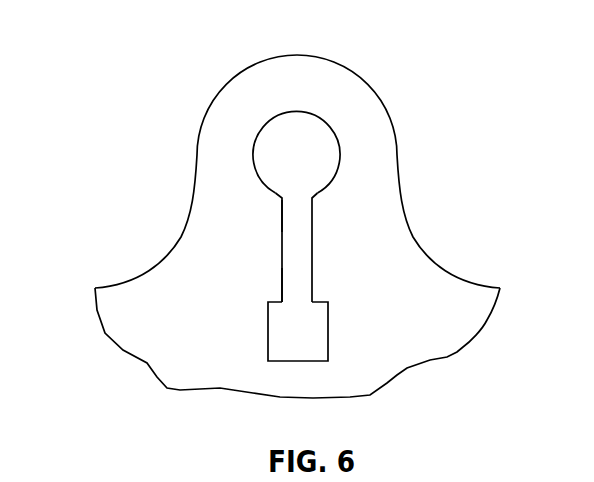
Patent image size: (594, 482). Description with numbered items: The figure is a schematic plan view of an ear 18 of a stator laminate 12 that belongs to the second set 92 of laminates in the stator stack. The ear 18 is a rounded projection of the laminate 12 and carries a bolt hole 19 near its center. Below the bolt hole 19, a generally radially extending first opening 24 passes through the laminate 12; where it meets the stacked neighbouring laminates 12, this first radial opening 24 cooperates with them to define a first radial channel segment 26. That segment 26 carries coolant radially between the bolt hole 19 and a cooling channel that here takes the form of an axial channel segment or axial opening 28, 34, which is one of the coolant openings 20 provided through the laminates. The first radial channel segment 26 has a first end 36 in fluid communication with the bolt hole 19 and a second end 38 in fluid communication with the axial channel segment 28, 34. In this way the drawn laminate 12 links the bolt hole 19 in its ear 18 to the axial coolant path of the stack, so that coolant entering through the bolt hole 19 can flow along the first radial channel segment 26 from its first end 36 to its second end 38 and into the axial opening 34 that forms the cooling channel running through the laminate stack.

The stator laminate 12 is at (221, 327).
The ear 18 is at (355, 110).
The bolt hole 19 is at (338, 143).
The coolant opening 20 is at (305, 218).
The second set of stator laminates 92 is at (168, 84).
The first opening 24 is at (414, 237).
The first radial channel segment 26 is at (298, 245).
The axial channel segment 28 is at (414, 293).
The axial opening 34 is at (317, 315).
The first end 36 is at (293, 213).
The second end 38 is at (292, 287).